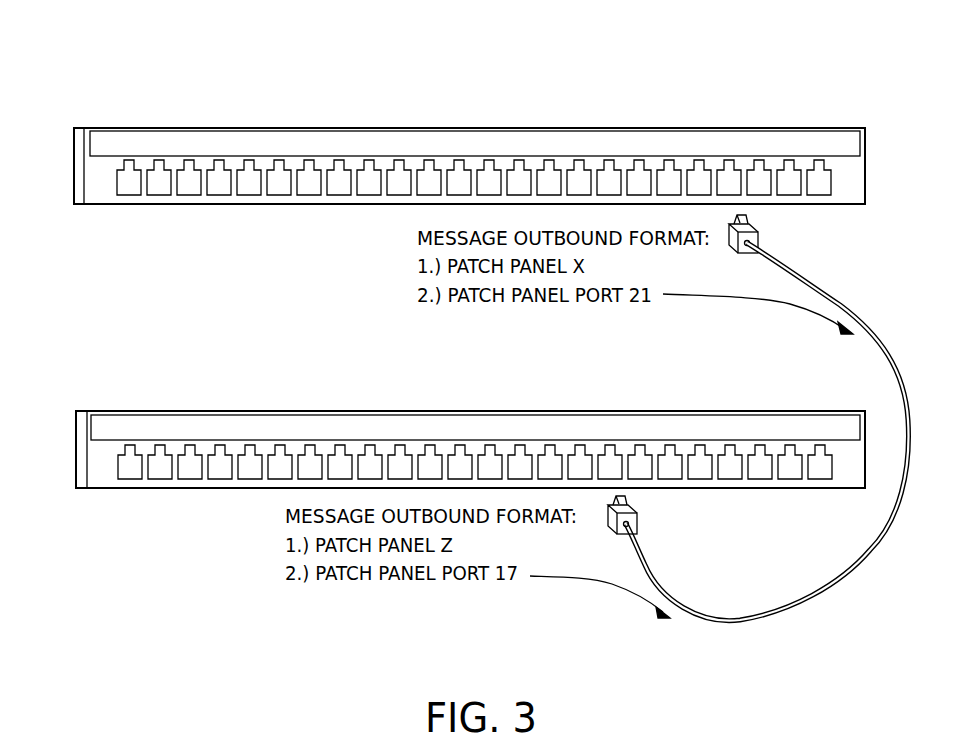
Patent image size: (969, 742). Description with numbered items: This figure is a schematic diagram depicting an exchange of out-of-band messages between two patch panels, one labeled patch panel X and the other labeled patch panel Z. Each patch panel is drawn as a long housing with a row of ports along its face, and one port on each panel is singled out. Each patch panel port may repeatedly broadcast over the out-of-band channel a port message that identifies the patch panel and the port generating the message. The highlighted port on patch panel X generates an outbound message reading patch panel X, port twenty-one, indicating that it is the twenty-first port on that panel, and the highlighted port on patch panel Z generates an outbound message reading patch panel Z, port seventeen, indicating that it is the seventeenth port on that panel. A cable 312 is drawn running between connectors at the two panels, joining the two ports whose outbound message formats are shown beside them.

The patch cord / cable 312 is at (811, 595).